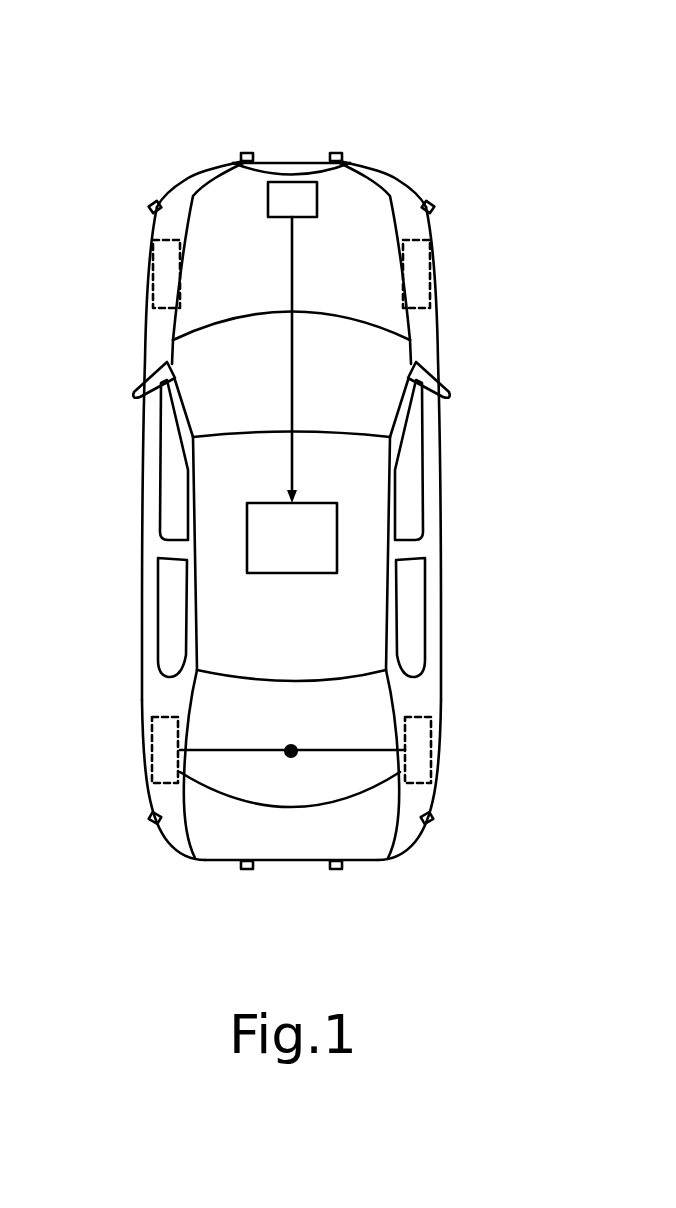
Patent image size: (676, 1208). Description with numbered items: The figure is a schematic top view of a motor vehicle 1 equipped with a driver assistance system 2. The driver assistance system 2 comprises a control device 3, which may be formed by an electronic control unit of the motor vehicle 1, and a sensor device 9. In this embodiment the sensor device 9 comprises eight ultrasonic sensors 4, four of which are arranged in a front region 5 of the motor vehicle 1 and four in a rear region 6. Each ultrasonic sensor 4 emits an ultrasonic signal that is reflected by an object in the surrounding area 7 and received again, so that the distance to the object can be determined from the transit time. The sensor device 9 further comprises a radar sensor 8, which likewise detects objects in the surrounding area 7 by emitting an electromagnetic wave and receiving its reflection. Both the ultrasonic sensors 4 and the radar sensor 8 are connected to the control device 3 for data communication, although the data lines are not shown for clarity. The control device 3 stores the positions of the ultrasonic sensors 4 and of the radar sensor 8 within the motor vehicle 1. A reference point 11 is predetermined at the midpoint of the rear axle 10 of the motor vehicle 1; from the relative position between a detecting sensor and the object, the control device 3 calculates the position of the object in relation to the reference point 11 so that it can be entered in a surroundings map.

The motor vehicle 1 is at (291, 156).
The driver assistance system 2 is at (222, 473).
The control device 3 is at (320, 530).
The ultrasonic sensors 4 is at (245, 152).
The front region 5 is at (363, 76).
The rear region 6 is at (283, 905).
The surrounding area 7 is at (90, 360).
The radar sensor 8 is at (280, 200).
The sensor device 9 is at (417, 150).
The rear axle 10 is at (362, 750).
The reference point 11 is at (297, 745).